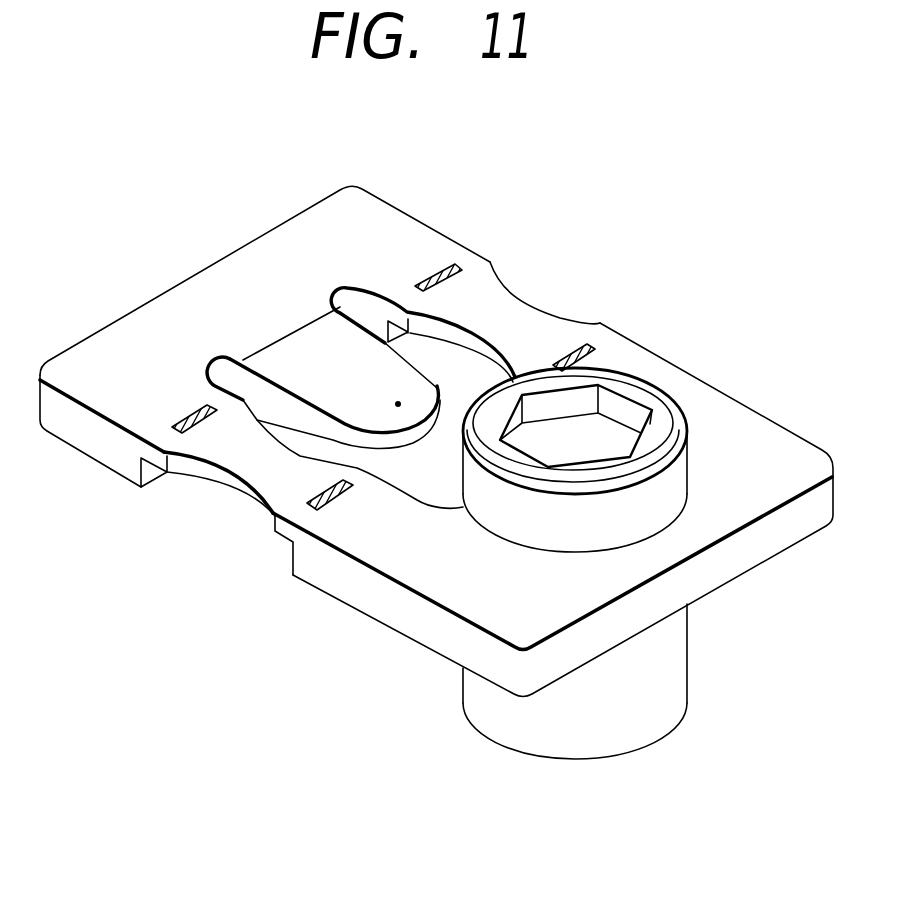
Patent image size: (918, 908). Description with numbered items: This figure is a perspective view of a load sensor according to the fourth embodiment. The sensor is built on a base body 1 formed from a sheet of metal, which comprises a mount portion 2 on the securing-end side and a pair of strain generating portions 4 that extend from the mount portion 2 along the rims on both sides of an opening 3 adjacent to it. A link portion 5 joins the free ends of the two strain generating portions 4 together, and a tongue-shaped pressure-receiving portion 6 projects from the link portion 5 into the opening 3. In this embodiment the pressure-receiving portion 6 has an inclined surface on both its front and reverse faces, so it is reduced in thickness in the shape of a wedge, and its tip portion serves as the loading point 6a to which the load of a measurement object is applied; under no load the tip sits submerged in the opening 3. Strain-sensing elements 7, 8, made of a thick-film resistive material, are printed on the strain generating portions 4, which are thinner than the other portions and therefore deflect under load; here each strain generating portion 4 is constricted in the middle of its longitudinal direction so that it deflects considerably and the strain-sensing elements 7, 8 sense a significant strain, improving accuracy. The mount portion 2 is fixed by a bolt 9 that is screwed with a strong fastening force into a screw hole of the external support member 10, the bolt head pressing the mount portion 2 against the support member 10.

The base body 1 is at (330, 580).
The mount portion 2 is at (782, 433).
The opening 3 is at (420, 477).
The strain generating portions 4 is at (510, 303).
The link portion 5 is at (207, 277).
The pressure-receiving portion 6 is at (340, 395).
The loading point 6a is at (398, 404).
The strain-sensing element 7 is at (592, 345).
The strain-sensing element 8 is at (454, 266).
The bolt 9 is at (663, 497).
The support member 10 is at (670, 680).